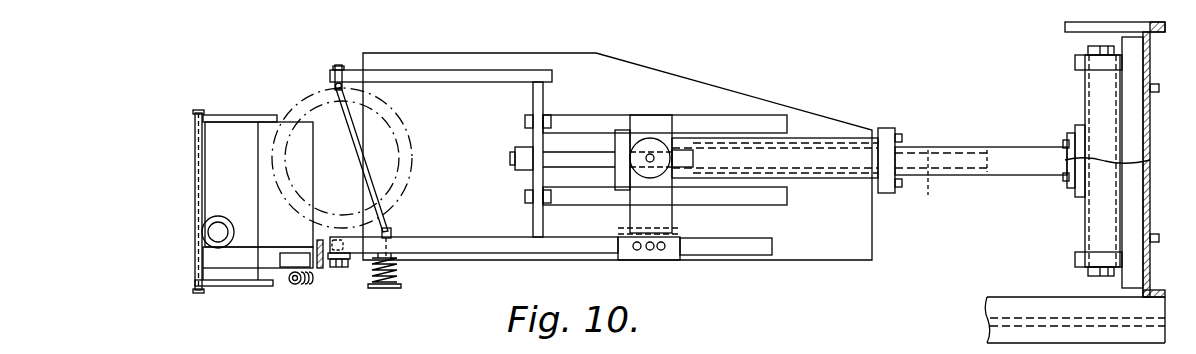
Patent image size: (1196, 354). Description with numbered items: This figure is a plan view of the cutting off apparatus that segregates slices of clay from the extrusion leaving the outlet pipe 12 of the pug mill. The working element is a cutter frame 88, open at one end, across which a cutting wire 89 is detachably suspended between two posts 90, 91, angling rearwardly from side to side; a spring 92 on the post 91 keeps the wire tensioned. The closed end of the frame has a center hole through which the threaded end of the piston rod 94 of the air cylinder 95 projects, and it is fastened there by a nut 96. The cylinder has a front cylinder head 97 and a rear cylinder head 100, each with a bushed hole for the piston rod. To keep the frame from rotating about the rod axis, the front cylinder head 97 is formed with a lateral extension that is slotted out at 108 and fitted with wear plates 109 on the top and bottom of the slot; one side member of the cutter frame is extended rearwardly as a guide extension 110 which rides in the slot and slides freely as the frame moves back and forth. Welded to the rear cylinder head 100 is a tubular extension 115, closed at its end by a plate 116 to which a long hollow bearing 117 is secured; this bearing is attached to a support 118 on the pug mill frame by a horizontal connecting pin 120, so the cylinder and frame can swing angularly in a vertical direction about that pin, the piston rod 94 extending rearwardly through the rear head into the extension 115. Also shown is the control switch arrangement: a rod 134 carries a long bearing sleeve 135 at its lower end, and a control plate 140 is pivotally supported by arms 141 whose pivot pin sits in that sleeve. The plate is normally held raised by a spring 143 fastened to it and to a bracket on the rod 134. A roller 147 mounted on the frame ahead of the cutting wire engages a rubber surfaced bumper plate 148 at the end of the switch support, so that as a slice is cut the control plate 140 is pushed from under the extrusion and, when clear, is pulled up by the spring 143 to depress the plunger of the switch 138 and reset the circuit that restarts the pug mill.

The pipe 12 is at (412, 172).
The cutter frame 88 is at (452, 82).
The cutting wire 89 is at (391, 224).
The post 90 is at (333, 82).
The post 91 is at (385, 241).
The spring 92 is at (372, 270).
The piston rod 94 is at (941, 190).
The air cylinder 95 is at (838, 160).
The nut 96 is at (520, 170).
The front cylinder head 97 is at (650, 122).
The rear cylinder head 100 is at (887, 128).
The slot 108 is at (668, 226).
The wear plates 109 is at (622, 233).
The guide extension 110 is at (720, 255).
The tubular extension 115 is at (1000, 177).
The plate 116 is at (1068, 136).
The long hollow bearing 117 is at (1130, 162).
The support 118 is at (1075, 62).
The connecting pin 120 is at (1090, 277).
The rod 134 is at (204, 232).
The bearing sleeve 135 is at (195, 160).
The switch 138 is at (290, 262).
The control plate 140 is at (303, 212).
The arms 141 is at (255, 115).
The spring 143 is at (296, 285).
The roller 147 is at (338, 267).
The bumper plate 148 is at (327, 243).